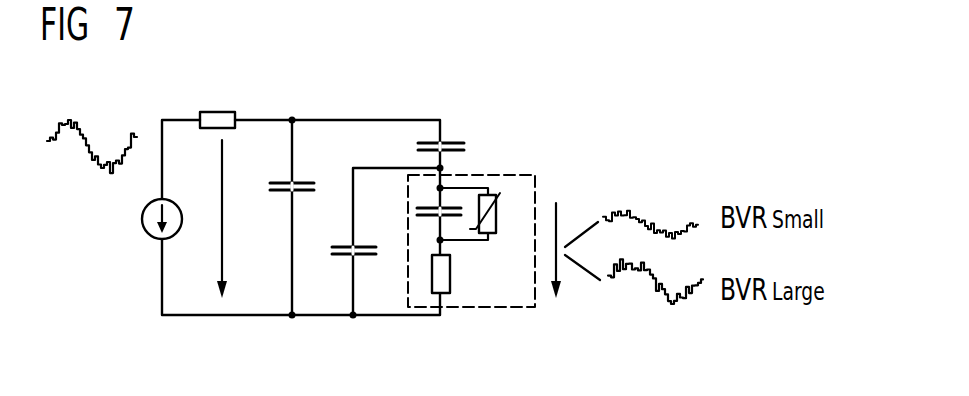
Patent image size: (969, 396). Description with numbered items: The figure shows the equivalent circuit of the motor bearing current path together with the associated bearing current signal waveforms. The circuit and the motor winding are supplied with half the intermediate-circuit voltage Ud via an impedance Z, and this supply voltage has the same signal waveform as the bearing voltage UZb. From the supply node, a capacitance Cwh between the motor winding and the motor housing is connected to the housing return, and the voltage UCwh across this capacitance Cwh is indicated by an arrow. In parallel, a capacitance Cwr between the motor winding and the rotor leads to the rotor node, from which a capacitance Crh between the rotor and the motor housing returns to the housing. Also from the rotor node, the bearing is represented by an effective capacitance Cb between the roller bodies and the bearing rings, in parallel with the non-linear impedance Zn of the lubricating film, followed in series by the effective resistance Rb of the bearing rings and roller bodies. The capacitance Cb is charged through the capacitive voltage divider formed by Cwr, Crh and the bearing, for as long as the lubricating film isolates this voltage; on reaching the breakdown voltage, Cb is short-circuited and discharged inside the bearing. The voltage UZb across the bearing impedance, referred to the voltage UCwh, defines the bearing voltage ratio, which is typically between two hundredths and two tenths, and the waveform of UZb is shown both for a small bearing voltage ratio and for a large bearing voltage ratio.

The impedance Z is at (218, 111).
The intermediate-circuit voltage Ud is at (125, 218).
The capacitance between motor winding and motor housing Cwh is at (277, 164).
The voltage across the capacitance Cwh UCwh is at (221, 266).
The capacitance between motor winding and rotor Cwr is at (419, 143).
The capacitance between rotor and motor housing Crh is at (344, 228).
The effective capacitance of the roller bearing Cb is at (427, 218).
The non-linear impedance of the lubricating film Zn is at (482, 221).
The effective resistance of the bearing Rb is at (458, 279).
The voltage across the bearing impedance UZb is at (560, 230).